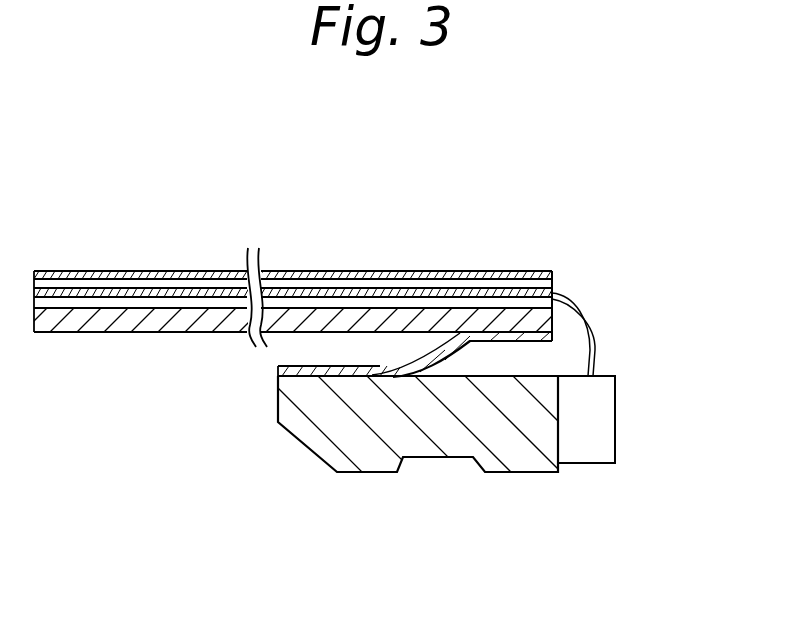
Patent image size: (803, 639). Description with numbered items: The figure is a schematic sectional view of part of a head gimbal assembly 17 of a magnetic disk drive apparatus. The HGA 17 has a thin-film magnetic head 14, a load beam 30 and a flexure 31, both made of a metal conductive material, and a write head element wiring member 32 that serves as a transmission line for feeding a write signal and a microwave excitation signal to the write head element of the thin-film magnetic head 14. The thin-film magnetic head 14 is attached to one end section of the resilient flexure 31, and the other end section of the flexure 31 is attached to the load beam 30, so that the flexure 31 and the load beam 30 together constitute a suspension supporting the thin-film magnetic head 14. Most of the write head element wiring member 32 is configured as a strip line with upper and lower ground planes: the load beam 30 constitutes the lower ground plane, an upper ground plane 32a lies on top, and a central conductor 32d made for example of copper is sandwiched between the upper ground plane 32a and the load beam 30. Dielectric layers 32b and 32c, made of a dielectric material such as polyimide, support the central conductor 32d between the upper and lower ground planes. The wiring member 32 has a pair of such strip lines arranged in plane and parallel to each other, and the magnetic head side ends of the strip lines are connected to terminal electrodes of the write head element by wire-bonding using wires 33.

The thin-film magnetic head 14 is at (531, 490).
The head gimbal assembly (HGA) 17 is at (594, 214).
The load beam 30 is at (185, 320).
The flexure 31 is at (303, 366).
The write head element wiring member 32 is at (303, 212).
The upper ground plane 32a is at (308, 272).
The dielectric layer 32b is at (378, 285).
The dielectric layer 32c is at (302, 180).
The central conductor 32d is at (435, 293).
The wires 33 is at (582, 310).